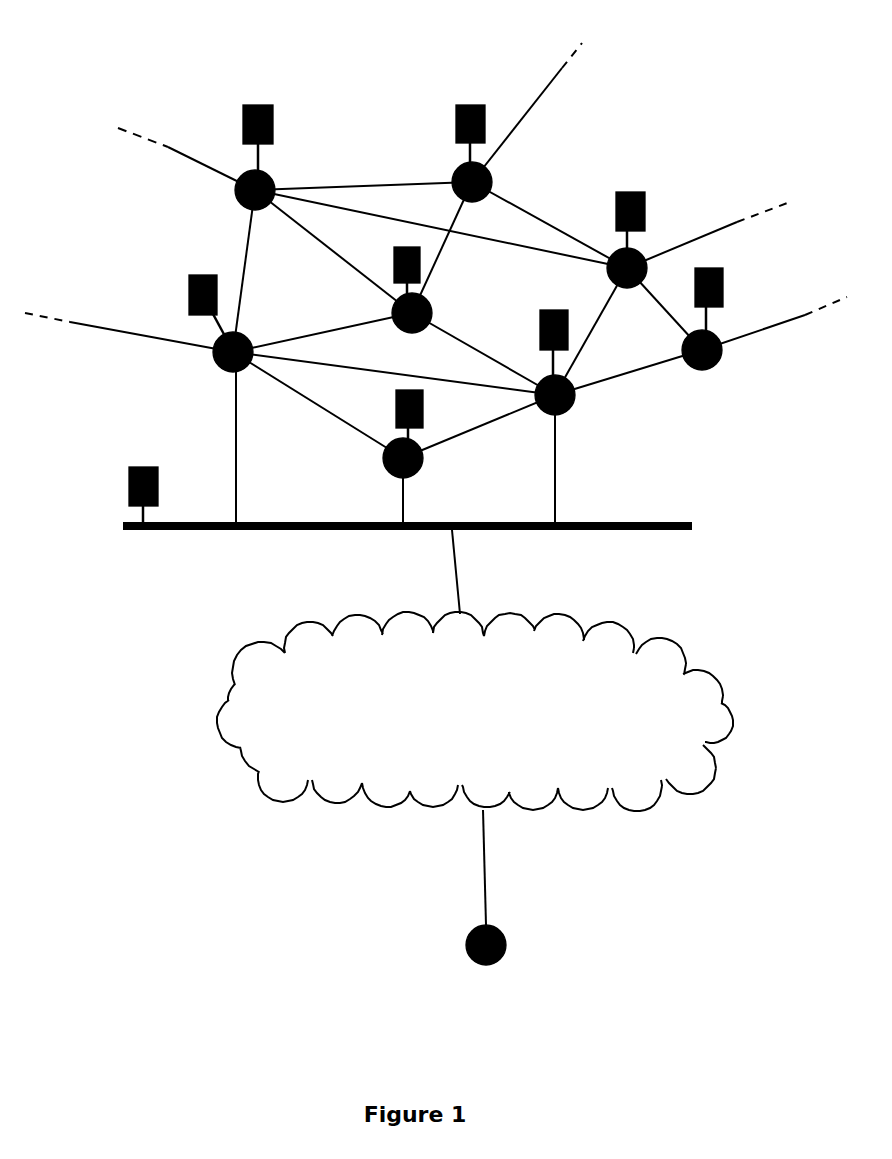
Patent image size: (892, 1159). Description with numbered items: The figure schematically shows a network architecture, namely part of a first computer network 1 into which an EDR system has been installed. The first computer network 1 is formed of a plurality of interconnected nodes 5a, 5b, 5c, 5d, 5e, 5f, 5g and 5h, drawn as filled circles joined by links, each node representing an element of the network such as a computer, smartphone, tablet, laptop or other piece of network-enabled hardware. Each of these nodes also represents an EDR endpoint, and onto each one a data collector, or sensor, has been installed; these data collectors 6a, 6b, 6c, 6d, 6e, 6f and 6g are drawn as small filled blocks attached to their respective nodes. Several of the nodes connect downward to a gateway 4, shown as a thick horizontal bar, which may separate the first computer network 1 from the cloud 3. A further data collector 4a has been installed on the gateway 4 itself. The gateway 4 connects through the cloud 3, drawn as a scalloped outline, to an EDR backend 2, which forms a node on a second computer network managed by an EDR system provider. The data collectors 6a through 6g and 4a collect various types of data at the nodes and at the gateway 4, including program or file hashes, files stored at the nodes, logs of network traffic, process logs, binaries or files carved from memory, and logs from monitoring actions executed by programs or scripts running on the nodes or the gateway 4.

The first computer network 1 is at (223, 35).
The EDR backend 2 is at (468, 935).
The cloud 3 is at (222, 703).
The gateway 4 is at (668, 520).
The data collector 4a is at (123, 491).
The node 5a is at (234, 190).
The node 5b is at (456, 185).
The node 5c is at (610, 268).
The node 5d is at (684, 348).
The node 5e is at (572, 400).
The node 5f is at (386, 458).
The node 5g is at (218, 359).
The network node 5h is at (393, 310).
The data collector 6a is at (313, 194).
The data collector 6b is at (453, 134).
The data collector 6c is at (613, 216).
The data collector 6d is at (726, 299).
The data collector 6e is at (538, 343).
The data collector 6f is at (390, 414).
The data collector 6g is at (191, 305).